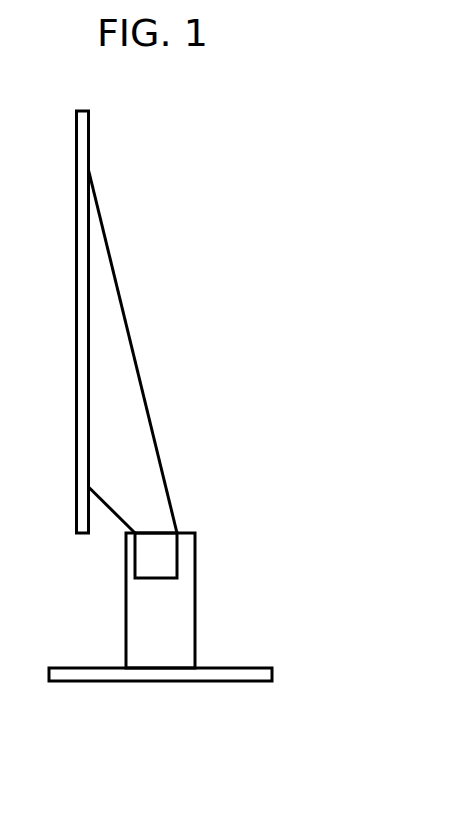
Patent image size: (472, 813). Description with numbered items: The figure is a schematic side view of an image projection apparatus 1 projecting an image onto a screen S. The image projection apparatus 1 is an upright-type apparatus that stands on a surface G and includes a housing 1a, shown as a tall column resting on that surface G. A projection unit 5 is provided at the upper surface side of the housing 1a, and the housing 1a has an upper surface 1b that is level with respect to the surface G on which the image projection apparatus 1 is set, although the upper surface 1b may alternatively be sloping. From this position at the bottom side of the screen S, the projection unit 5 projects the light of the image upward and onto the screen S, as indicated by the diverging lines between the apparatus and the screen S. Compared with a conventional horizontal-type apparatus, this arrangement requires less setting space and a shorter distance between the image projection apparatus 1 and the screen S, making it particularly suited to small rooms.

The image projection apparatus 1 is at (228, 561).
The housing 1a is at (195, 608).
The upper surface 1b is at (178, 533).
The projection unit 5 is at (141, 560).
The screen S is at (75, 331).
The surface G is at (225, 682).